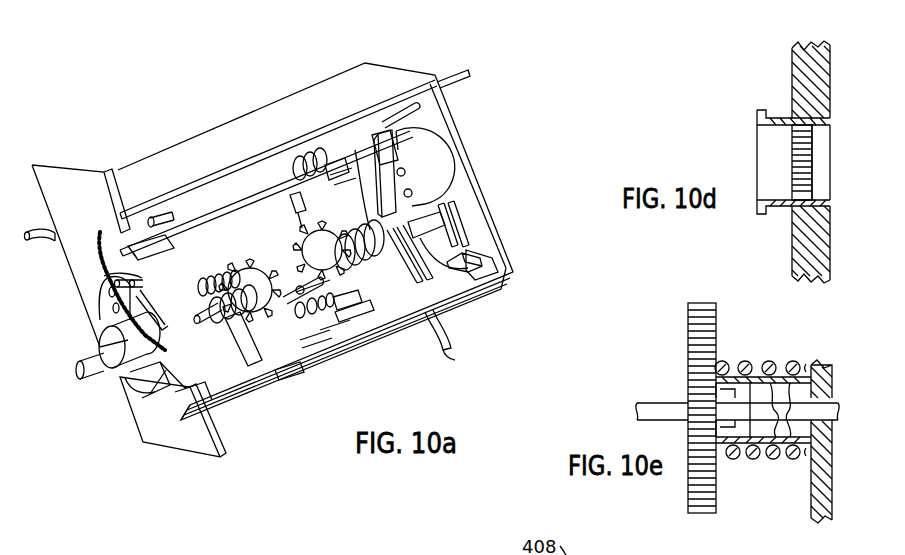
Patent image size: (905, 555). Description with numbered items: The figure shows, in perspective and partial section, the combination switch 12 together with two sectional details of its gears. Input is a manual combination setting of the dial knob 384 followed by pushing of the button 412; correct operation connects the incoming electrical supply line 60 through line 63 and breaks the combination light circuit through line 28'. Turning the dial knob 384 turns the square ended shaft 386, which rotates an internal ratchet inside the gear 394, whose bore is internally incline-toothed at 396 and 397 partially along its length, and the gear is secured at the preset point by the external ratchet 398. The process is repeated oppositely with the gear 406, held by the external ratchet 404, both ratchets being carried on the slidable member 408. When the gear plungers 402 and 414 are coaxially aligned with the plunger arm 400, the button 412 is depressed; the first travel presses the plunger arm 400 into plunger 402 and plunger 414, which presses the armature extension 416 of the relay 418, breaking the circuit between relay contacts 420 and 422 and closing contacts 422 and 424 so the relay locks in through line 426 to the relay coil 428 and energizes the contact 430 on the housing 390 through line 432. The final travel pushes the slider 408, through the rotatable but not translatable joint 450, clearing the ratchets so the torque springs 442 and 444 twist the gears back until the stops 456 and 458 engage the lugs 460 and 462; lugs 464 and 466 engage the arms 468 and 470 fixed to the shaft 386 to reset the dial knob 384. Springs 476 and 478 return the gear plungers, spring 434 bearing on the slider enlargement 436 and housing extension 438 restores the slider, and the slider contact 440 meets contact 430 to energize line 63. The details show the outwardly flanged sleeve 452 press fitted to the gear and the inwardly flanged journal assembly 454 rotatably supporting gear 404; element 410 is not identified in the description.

In FIG. 10a, the combination switch 12 is at (134, 74).
In FIG. 10a, the gear 394 is at (250, 135).
In FIG. 10d, the gear 394 is at (826, 88).
In FIG. 10a, the external ratchet 398 is at (232, 168).
In FIG. 10a, the spring 476 is at (186, 226).
In FIG. 10a, the slidable member 408 is at (86, 172).
In FIG. 10a, the line 63 is at (160, 215).
In FIG. 10a, the gear plunger 402 is at (142, 235).
In FIG. 10a, the slider contact 440 is at (108, 287).
In FIG. 10a, the housing supported contact 430 is at (100, 294).
In FIG. 10a, the plunger arm 400 is at (104, 277).
In FIG. 10a, the dial knob 384 is at (150, 395).
In FIG. 10a, the button 412 is at (82, 372).
In FIG. 10a, the roller bracket 410 is at (150, 398).
In FIG. 10a, the rotatable but not translatable joint 450 is at (168, 388).
In FIG. 10a, the housing 390 is at (222, 448).
In FIG. 10a, the square ended shaft 386 is at (226, 392).
In FIG. 10a, the arm 468 is at (237, 291).
In FIG. 10a, the lug 460 is at (306, 316).
In FIG. 10a, the lug 464 is at (356, 236).
In FIG. 10a, the arm 470 is at (312, 207).
In FIG. 10a, the lug 466 is at (280, 165).
In FIG. 10a, the gear 406 is at (306, 158).
In FIG. 10a, the slider enlargement 436 is at (338, 170).
In FIG. 10a, the spring 434 is at (356, 150).
In FIG. 10a, the housing extension 438 is at (383, 135).
In FIG. 10a, the external ratchet 404 is at (395, 160).
In FIG. 10e, the external ratchet 404 is at (700, 303).
In FIG. 10a, the armature extension 416 is at (420, 133).
In FIG. 10a, the relay coil 428 is at (433, 163).
In FIG. 10a, the relay 418 is at (425, 138).
In FIG. 10a, the relay contact 422 is at (420, 178).
In FIG. 10a, the relay contact 424 is at (445, 190).
In FIG. 10a, the line 426 is at (463, 240).
In FIG. 10a, the relay contact 420 is at (488, 292).
In FIG. 10a, the torque spring 444 is at (458, 292).
In FIG. 10a, the line 432 is at (445, 300).
In FIG. 10a, the line 28' is at (459, 364).
In FIG. 10a, the stop 458 is at (362, 300).
In FIG. 10a, the lug 462 is at (368, 322).
In FIG. 10a, the spring 478 is at (345, 336).
In FIG. 10a, the gear plunger 414 is at (318, 350).
In FIG. 10a, the torque spring 442 is at (256, 365).
In FIG. 10a, the stop 456 is at (294, 382).
In FIG. 10a, the incoming electrical supply line 60 is at (487, 73).
In FIG. 10d, the outwardly flanged sleeve 452 is at (760, 216).
In FIG. 10d, the internal gearing 397 is at (824, 152).
In FIG. 10d, the internal incline teeth 396 is at (813, 178).
In FIG. 10e, the inwardly flanged journal assembly 454 is at (743, 460).